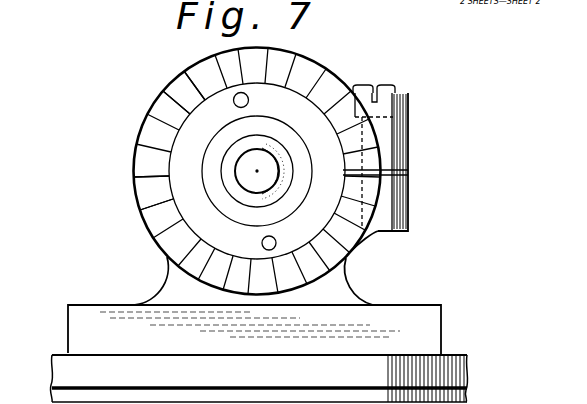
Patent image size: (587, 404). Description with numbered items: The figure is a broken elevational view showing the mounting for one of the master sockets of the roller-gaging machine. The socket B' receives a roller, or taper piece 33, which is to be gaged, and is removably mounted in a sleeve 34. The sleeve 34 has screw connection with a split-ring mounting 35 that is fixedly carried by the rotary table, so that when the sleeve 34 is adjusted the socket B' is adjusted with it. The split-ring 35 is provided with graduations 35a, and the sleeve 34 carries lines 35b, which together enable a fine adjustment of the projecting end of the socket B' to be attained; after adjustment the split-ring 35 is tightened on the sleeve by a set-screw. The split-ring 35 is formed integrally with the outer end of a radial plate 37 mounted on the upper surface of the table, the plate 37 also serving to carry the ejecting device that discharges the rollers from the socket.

The taper piece 33 is at (260, 184).
The sleeve 34 is at (260, 169).
The split-ring mounting 35 is at (165, 243).
The graduations 35a is at (158, 121).
The lines 35b is at (182, 184).
The socket B' is at (197, 176).
The radial plate 37 is at (392, 312).